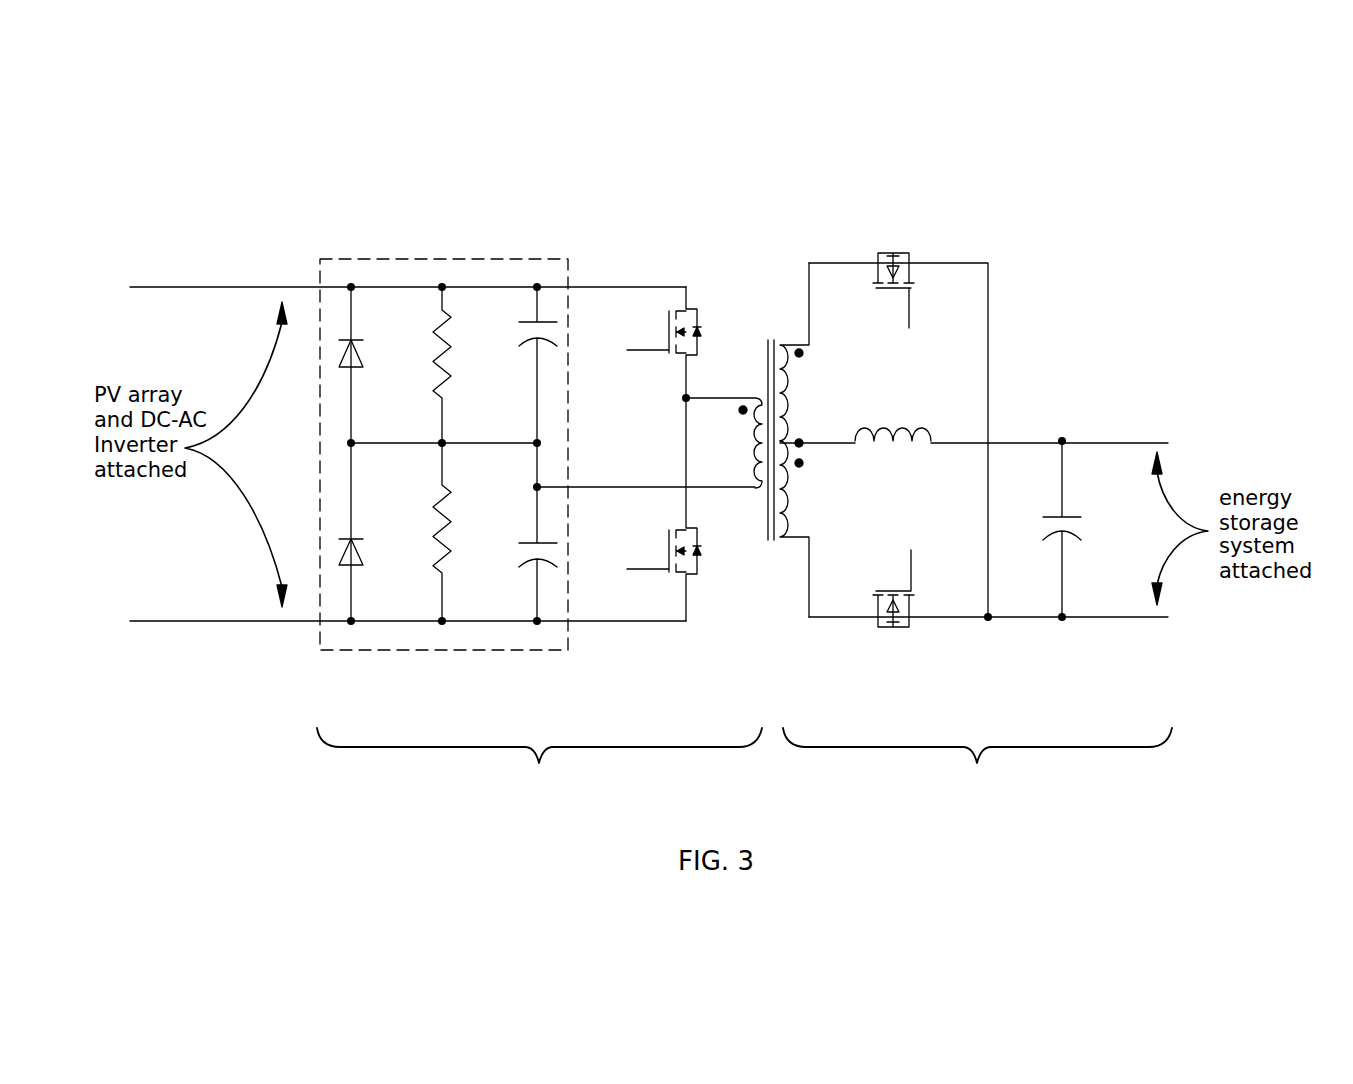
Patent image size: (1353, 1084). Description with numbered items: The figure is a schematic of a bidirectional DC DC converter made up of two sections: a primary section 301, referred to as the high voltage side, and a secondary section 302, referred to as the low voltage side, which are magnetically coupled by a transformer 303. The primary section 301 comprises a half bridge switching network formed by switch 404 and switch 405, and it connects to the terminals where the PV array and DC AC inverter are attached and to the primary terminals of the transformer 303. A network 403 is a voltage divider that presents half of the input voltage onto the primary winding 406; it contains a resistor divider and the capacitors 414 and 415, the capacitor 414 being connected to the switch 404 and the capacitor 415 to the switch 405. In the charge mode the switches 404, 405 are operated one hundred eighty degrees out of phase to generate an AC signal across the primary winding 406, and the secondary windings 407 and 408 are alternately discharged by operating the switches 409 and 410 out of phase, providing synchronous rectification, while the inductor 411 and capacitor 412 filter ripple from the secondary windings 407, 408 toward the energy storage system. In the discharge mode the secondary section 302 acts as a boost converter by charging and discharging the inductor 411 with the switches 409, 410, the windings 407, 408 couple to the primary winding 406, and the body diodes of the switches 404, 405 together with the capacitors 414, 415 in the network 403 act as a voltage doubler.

The primary section 301 is at (539, 763).
The secondary section 302 is at (977, 763).
The transformer 303 is at (770, 178).
The network 403 is at (344, 256).
The switch 404 is at (668, 330).
The switch 405 is at (690, 576).
The primary winding 406 is at (731, 397).
The secondary winding 407 is at (797, 342).
The secondary winding 408 is at (795, 540).
The switch 409 is at (897, 253).
The switch 410 is at (910, 628).
The inductor 411 is at (905, 430).
The capacitor 412 is at (1079, 517).
The capacitor 414 is at (521, 322).
The capacitor 415 is at (522, 543).